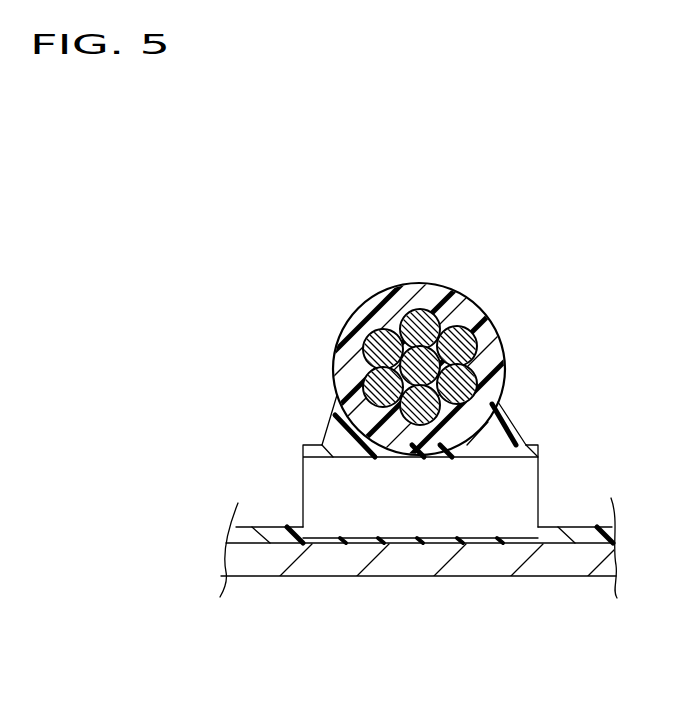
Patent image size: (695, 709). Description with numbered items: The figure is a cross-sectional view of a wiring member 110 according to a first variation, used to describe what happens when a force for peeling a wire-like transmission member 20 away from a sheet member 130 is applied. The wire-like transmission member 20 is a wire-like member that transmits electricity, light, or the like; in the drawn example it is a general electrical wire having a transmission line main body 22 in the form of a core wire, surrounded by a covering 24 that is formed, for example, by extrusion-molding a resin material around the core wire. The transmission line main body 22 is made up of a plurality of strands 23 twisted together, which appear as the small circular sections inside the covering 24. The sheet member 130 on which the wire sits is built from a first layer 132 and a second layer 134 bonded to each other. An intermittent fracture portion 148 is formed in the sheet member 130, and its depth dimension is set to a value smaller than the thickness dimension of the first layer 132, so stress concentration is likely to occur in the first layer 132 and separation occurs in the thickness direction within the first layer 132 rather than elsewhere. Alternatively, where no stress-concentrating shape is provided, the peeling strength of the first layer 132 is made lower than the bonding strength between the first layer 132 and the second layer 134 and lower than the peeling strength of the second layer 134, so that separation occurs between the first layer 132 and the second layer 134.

The wiring member 110 is at (295, 158).
The wire-like transmission member 20 is at (477, 207).
The transmission line main body 22 is at (488, 245).
The strand 23 is at (423, 322).
The covering 24 is at (407, 303).
The sheet member 130 is at (380, 579).
The first layer 132 is at (510, 425).
The second layer 134 is at (530, 562).
The intermittent fracture portion 148 is at (302, 528).